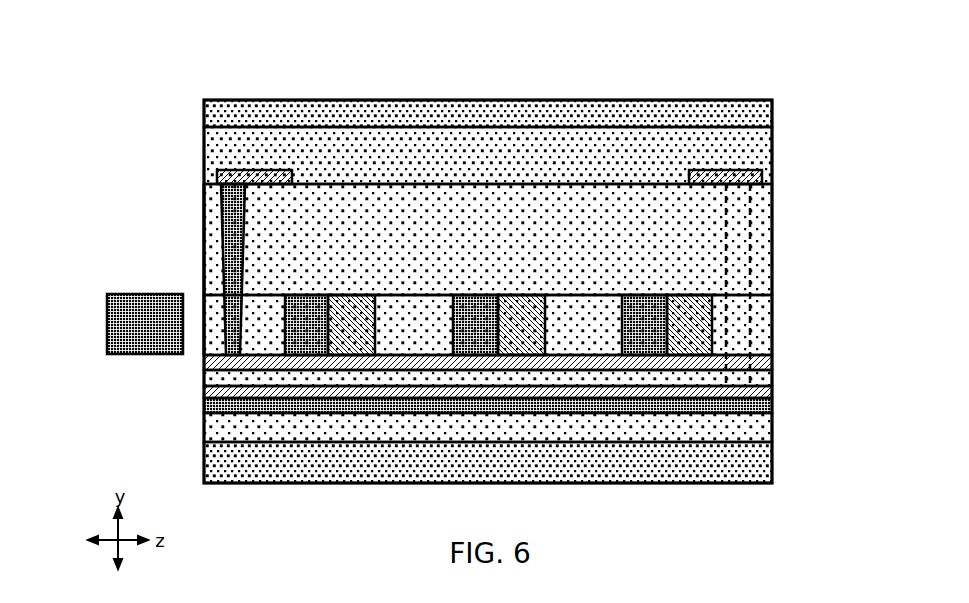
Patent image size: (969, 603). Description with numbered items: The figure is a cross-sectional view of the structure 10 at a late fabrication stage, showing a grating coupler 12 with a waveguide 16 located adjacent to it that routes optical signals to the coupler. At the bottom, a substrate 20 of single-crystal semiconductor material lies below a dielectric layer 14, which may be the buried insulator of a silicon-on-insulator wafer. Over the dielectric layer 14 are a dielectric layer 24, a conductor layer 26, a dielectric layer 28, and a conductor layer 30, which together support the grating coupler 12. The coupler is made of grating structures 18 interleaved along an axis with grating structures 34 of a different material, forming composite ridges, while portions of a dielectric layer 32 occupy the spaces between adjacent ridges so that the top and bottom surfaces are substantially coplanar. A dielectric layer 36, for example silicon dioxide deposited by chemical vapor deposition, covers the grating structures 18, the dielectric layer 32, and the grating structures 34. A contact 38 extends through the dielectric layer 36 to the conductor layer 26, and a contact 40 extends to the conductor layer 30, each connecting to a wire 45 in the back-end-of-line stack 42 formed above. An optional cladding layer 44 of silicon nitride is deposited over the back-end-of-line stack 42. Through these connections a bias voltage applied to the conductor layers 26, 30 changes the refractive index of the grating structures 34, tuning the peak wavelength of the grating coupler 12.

The structure 10 is at (113, 64).
The grating coupler 12 is at (792, 266).
The dielectric layer 14 is at (752, 430).
The waveguide 16 is at (125, 326).
The grating structures 18 is at (302, 305).
The substrate 20 is at (230, 468).
The layer 24 is at (222, 405).
The conductor layer 26 is at (770, 392).
The layer 28 is at (212, 378).
The conductor layer 30 is at (770, 363).
The dielectric layer 32 is at (762, 320).
The grating structures 34 is at (352, 325).
The dielectric layer 36 is at (212, 258).
The contact 38 is at (752, 208).
The contact 40 is at (230, 212).
The back-end-of-line stack 42 is at (752, 150).
The cladding layer 44 is at (228, 110).
The wire 45 is at (224, 174).